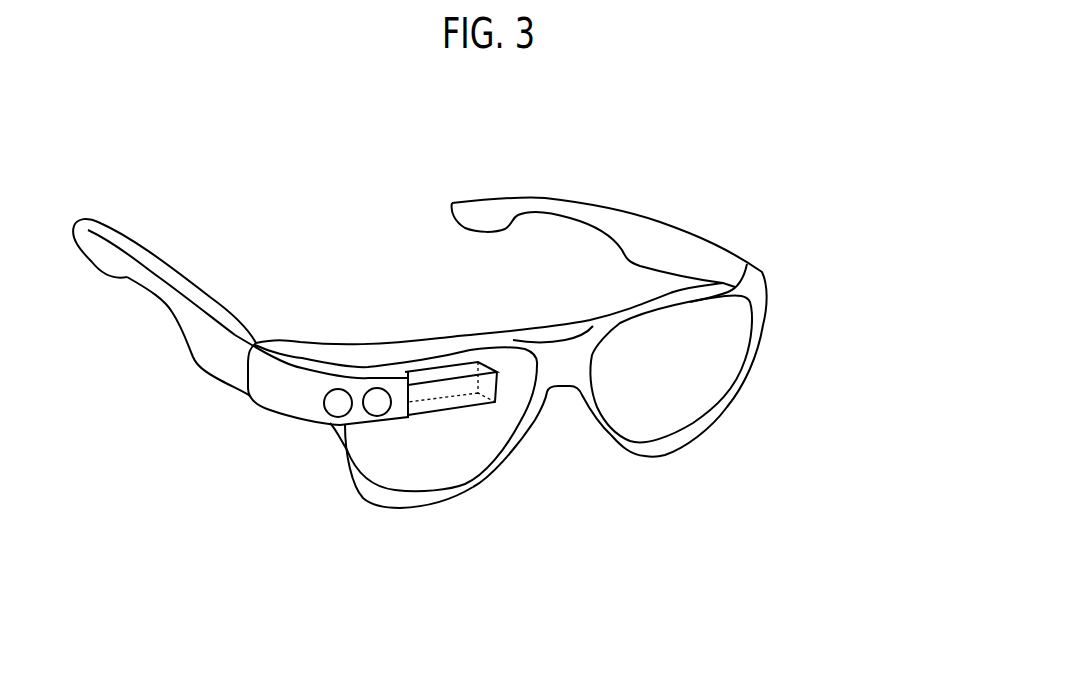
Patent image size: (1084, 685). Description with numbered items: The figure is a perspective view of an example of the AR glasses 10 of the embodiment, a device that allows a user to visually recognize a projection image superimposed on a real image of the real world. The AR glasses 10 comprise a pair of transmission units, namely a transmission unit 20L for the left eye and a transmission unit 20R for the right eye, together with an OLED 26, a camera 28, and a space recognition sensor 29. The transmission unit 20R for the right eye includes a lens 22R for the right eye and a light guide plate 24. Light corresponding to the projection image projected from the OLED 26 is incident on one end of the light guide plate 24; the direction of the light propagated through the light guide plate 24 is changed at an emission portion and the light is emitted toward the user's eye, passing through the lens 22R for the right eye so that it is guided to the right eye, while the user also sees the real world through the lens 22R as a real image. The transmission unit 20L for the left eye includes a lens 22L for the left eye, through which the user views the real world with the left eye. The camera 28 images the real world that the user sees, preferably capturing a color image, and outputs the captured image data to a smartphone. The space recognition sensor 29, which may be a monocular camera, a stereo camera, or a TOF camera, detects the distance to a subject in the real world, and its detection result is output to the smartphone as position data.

The AR glasses 10 is at (753, 128).
The transmission unit for a right eye 20R is at (363, 520).
The transmission unit for a left eye 20L is at (695, 450).
The lens for a right eye 22R is at (428, 477).
The lens for a left eye 22L is at (650, 432).
The light guide plate 24 is at (428, 375).
The organic light emitting diode (OLED) 26 is at (290, 383).
The camera 28 is at (376, 400).
The space recognition sensor 29 is at (338, 406).